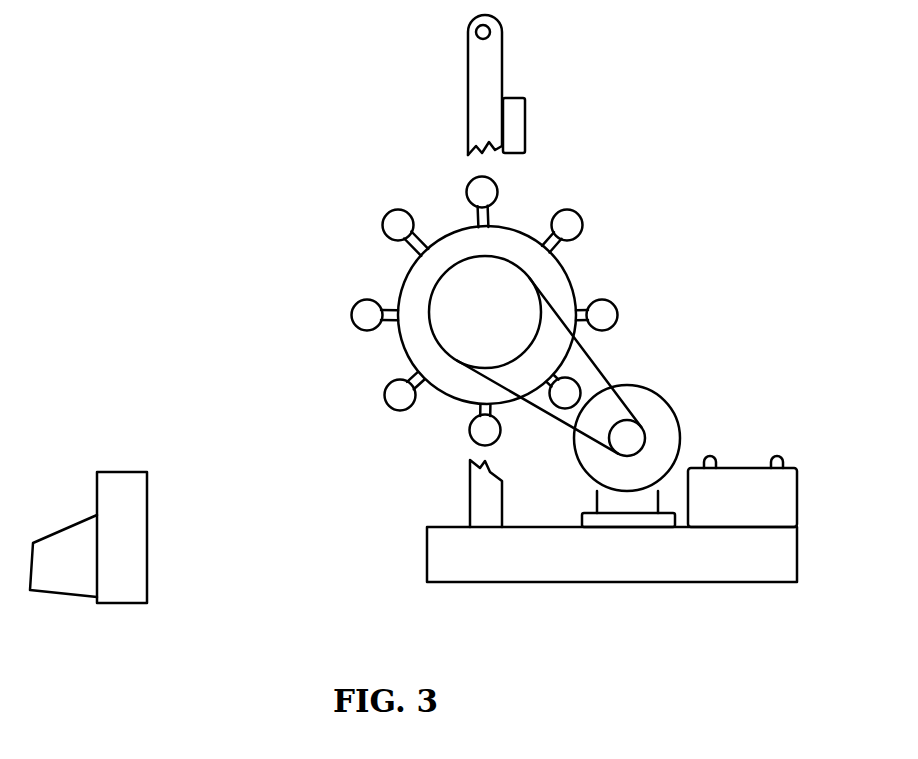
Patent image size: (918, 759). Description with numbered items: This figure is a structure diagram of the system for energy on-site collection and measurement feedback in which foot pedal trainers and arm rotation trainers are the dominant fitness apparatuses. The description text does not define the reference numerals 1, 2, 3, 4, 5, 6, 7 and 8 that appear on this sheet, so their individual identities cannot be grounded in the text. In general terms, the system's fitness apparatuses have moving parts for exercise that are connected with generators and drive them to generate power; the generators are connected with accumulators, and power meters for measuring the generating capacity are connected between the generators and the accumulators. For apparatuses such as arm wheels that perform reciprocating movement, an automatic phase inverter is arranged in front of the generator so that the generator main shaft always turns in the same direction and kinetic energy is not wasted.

The base 1 is at (467, 563).
The swing arm 2 is at (487, 62).
The cam wheel 3 is at (612, 299).
The pulley 4 is at (661, 422).
The motor 5 is at (738, 488).
The belt 6 is at (545, 410).
The block 7 is at (513, 130).
The gripper 8 is at (125, 547).